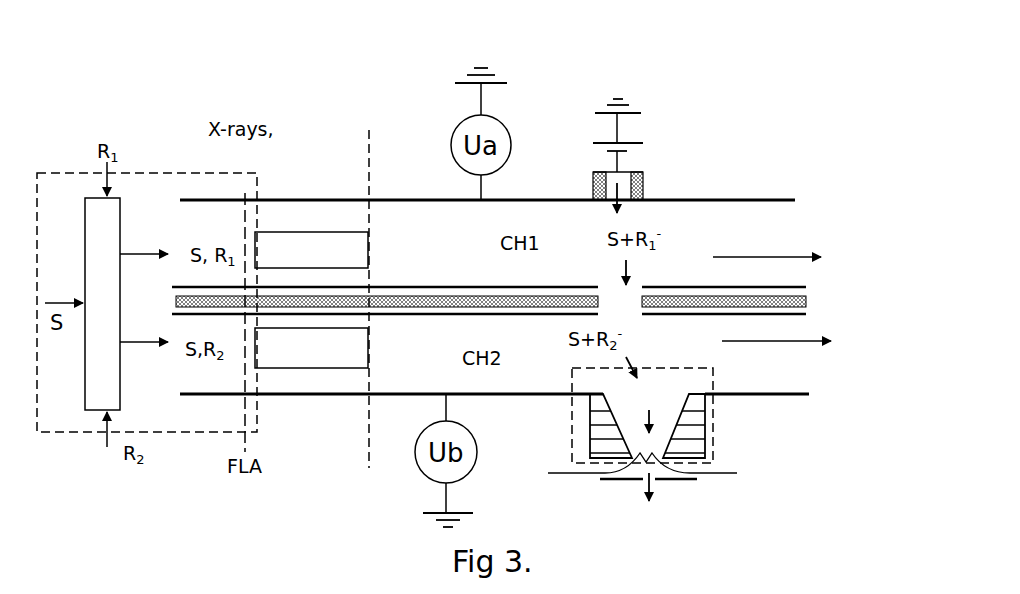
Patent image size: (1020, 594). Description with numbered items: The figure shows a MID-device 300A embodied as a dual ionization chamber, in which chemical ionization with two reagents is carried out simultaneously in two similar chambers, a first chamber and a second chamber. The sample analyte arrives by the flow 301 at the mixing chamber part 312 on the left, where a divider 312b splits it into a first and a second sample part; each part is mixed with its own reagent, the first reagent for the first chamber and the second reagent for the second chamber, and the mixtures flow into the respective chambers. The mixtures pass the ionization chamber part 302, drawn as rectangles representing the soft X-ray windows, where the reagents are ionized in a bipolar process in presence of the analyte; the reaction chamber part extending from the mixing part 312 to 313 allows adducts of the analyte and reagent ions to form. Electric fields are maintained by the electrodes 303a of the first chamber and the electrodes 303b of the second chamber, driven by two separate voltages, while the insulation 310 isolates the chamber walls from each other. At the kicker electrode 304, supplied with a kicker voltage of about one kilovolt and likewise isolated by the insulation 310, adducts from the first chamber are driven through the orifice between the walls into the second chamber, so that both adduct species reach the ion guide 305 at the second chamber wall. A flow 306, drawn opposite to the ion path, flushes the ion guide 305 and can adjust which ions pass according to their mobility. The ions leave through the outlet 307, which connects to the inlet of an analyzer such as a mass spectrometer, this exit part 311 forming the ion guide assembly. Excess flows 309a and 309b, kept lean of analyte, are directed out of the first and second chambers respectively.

The MID-device 300A is at (130, 116).
The flow 301 is at (104, 299).
The ionization chamber part 302 is at (342, 353).
The electrodes 303a is at (460, 287).
The electrodes 303b is at (427, 316).
The kicker electrode 304 is at (610, 172).
The ion guide 305 is at (592, 445).
The flow 306 is at (642, 468).
The outlet 307 is at (669, 500).
The excess flow 309a is at (767, 238).
The excess flow 309b is at (785, 358).
The insulation 310 is at (645, 180).
The exit part 311 is at (713, 415).
The mixing chamber part 312 is at (182, 432).
The divider 312b is at (84, 402).
The reaction chamber part boundary 313 is at (369, 466).